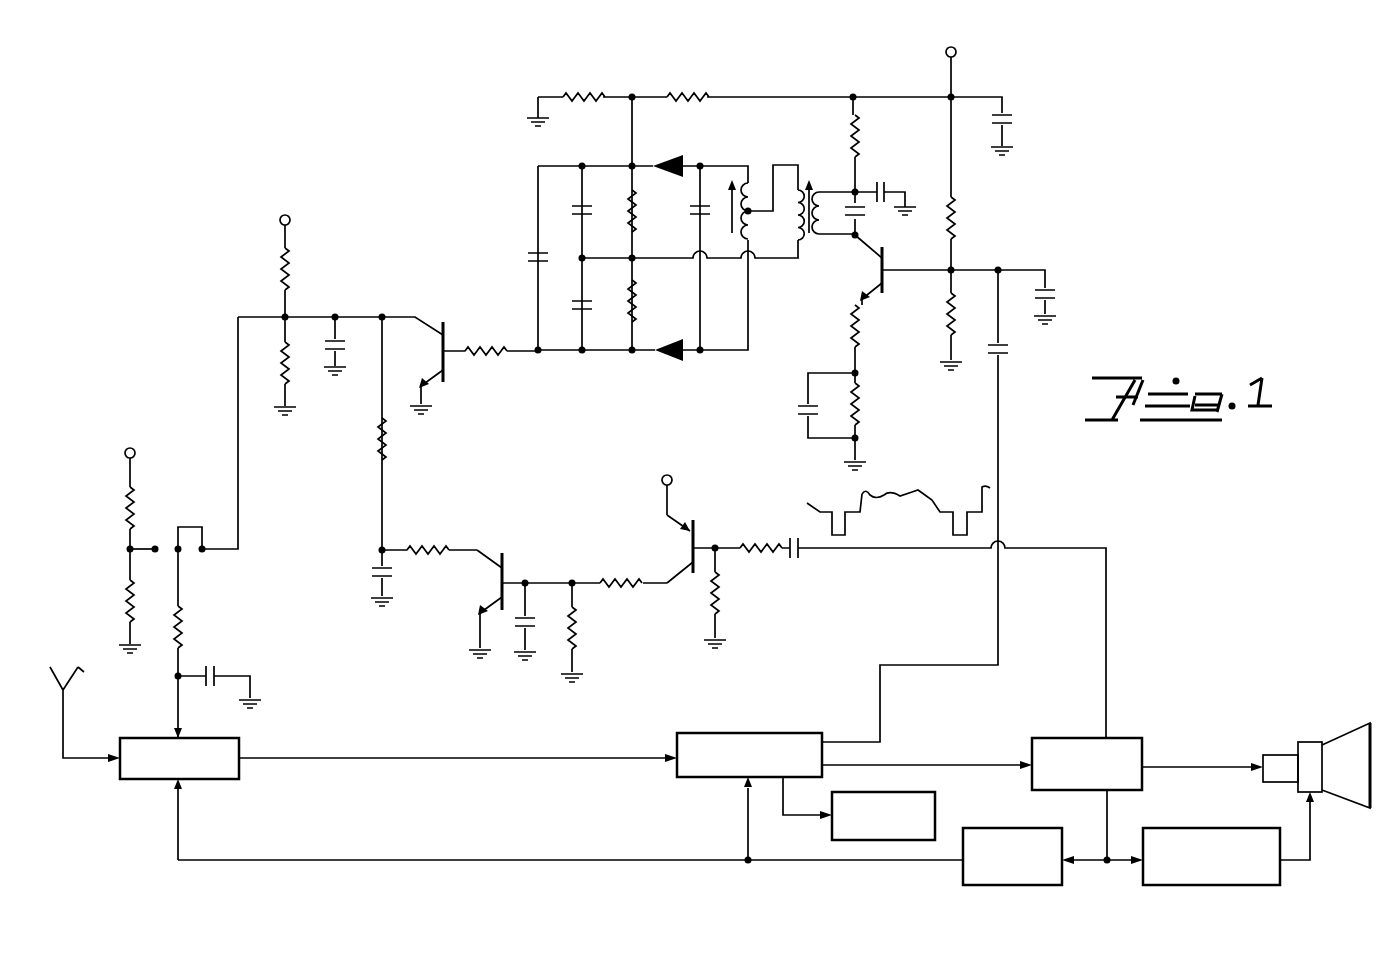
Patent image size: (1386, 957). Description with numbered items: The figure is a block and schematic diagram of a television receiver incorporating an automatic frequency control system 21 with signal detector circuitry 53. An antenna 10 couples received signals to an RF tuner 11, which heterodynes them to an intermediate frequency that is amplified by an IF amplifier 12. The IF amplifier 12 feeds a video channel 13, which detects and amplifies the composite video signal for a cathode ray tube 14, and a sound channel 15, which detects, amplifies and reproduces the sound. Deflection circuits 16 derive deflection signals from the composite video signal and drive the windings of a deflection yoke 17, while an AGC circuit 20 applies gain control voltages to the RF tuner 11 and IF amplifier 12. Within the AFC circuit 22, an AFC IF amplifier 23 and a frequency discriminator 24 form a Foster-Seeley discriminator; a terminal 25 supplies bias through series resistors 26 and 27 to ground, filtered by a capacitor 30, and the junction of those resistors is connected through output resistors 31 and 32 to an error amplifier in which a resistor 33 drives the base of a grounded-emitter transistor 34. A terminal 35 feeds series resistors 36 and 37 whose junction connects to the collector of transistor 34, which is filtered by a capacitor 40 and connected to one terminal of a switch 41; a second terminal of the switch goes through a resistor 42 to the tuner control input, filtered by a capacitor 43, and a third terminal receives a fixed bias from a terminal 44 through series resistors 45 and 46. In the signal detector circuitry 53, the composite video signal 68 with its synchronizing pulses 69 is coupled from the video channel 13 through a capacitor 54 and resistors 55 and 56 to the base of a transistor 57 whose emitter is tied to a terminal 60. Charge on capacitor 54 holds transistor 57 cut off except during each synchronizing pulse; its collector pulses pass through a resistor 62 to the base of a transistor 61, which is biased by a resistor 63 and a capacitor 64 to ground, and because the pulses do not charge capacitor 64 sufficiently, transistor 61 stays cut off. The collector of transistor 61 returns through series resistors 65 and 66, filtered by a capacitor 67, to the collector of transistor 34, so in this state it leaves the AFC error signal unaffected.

The antenna 10 is at (85, 714).
The RF tuner 11 is at (140, 780).
The IF amplifier 12 is at (762, 733).
The video channel 13 is at (1118, 738).
The cathode ray tube 14 is at (1352, 730).
The sound channel 15 is at (938, 808).
The deflection circuits 16 is at (1250, 828).
The deflection yoke 17 is at (1308, 742).
The automatic gain control circuit 20 is at (1007, 828).
The automatic frequency control system 21 is at (415, 186).
The AFC circuit 22 is at (1010, 222).
The AFC IF amplifier 23 is at (864, 283).
The frequency discriminator 24 is at (672, 222).
The terminal 25 is at (957, 50).
The resistor 26 is at (697, 94).
The resistor 27 is at (592, 94).
The filter capacitor 30 is at (1012, 120).
The output resistor 31 is at (624, 198).
The output resistor 32 is at (628, 293).
The resistor 33 is at (488, 344).
The transistor 34 is at (430, 369).
The terminal 35 is at (291, 222).
The resistor 36 is at (292, 264).
The resistor 37 is at (280, 372).
The filter capacitor 40 is at (340, 352).
The switch 41 is at (172, 526).
The resistor 42 is at (183, 620).
The filter capacitor 43 is at (216, 670).
The terminal 44 is at (136, 452).
The resistor 45 is at (126, 503).
The resistor 46 is at (126, 603).
The signal detector circuitry 53 is at (565, 494).
The capacitor 54 is at (800, 562).
The resistor 55 is at (760, 546).
The resistor 56 is at (720, 601).
The transistor 57 is at (670, 563).
The terminal 60 is at (673, 479).
The transistor 61 is at (481, 595).
The resistor 62 is at (618, 584).
The resistor 63 is at (578, 626).
The capacitor 64 is at (519, 630).
The resistor 65 is at (432, 546).
The resistor 66 is at (376, 434).
The filter capacitor 67 is at (374, 570).
The composite video signal 68 is at (914, 498).
The synchronizing pulses 69 is at (845, 520).